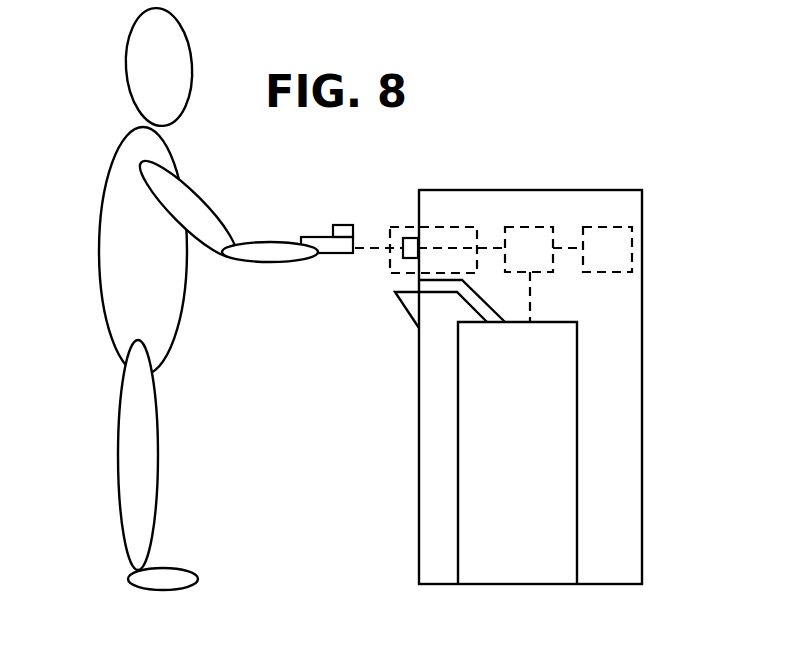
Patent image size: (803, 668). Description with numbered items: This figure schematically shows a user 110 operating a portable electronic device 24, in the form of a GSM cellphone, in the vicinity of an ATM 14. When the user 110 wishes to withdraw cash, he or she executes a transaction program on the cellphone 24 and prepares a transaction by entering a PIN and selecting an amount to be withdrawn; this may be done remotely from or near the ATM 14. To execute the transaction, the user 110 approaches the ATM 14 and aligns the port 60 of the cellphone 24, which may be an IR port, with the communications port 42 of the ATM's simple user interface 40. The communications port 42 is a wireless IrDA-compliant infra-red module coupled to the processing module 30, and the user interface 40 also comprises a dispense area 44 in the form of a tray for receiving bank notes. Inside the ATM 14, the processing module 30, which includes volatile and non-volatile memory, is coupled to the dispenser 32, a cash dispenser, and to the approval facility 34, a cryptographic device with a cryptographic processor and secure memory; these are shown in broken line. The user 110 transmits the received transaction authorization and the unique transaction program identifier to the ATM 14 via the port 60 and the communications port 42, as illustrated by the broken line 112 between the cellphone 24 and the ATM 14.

The user 110 is at (128, 48).
The portable electronic device 24 is at (300, 236).
The port 60 is at (345, 225).
The broken line 112 is at (379, 255).
The user interface 40 is at (444, 227).
The communications port 42 is at (408, 237).
The processing module 30 is at (529, 227).
The approval facility 34 is at (604, 227).
The dispense area 44 is at (396, 300).
The dispenser 32 is at (567, 330).
The ATM 14 is at (642, 367).